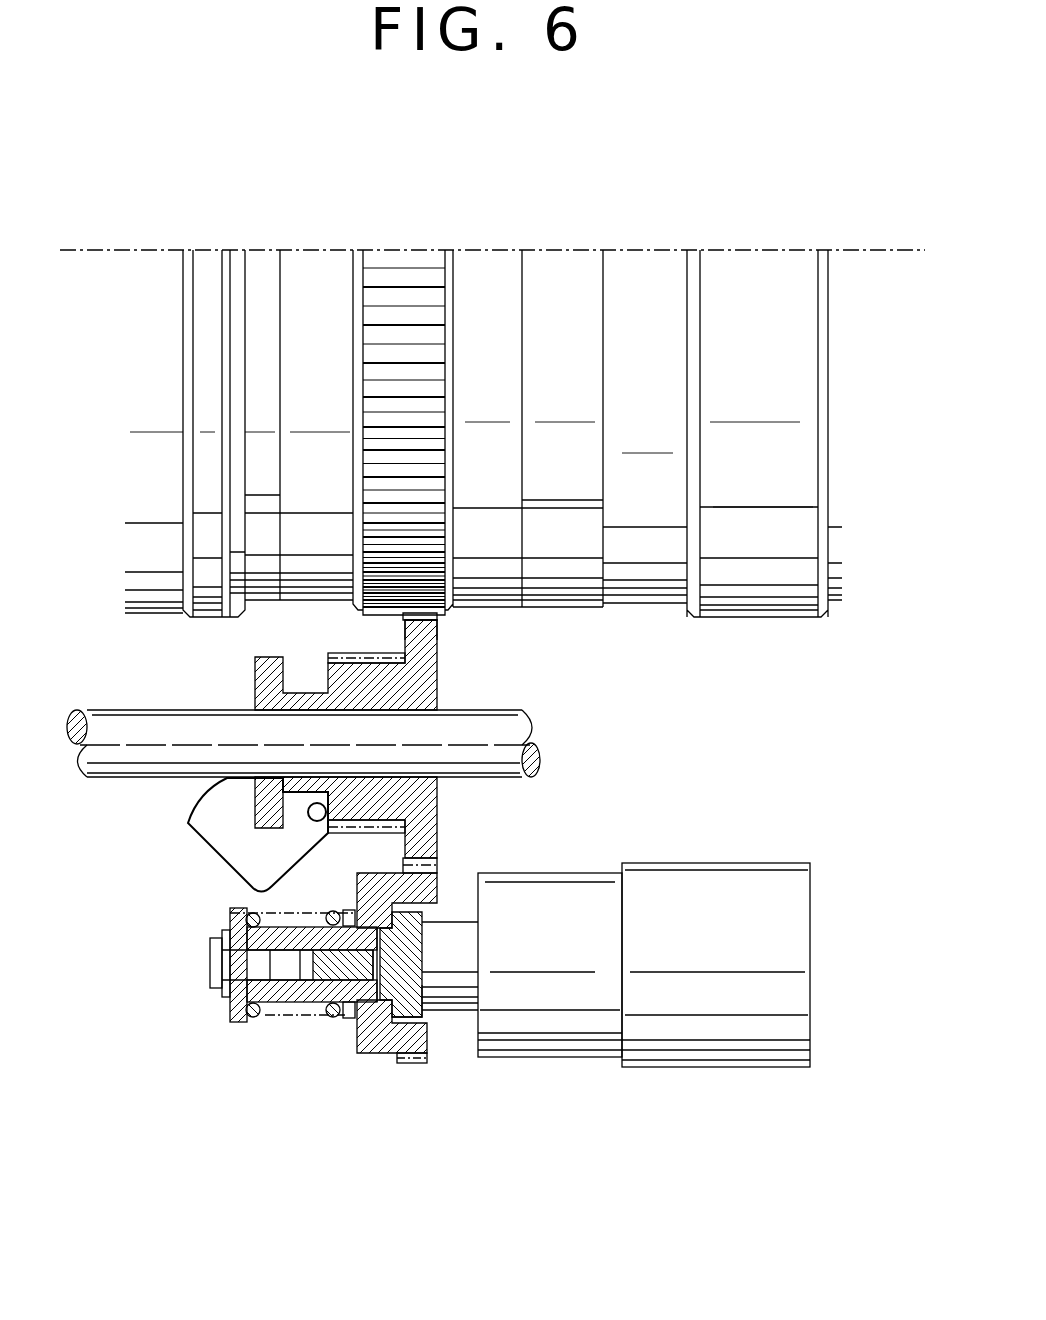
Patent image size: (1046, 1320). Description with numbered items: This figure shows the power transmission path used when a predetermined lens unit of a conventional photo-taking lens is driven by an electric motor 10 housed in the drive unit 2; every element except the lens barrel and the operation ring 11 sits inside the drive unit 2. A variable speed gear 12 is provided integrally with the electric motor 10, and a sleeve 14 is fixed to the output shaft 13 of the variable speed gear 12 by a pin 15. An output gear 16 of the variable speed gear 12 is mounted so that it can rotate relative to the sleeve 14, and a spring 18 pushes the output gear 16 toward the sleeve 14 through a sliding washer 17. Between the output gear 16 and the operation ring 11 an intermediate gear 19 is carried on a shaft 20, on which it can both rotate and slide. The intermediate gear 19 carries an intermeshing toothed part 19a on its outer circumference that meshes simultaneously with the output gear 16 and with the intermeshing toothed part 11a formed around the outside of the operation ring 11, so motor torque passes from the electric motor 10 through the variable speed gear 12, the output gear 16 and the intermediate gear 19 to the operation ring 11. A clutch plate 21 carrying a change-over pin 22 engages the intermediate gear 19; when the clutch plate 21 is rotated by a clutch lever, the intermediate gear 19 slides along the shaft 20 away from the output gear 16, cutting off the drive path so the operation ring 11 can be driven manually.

The drive unit 2 is at (705, 848).
The electric motor 10 is at (730, 1032).
The operation ring 11 is at (317, 290).
The intermeshing toothed part 11a is at (396, 614).
The variable speed gear 12 is at (567, 1027).
The output shaft 13 is at (323, 973).
The sleeve 14 is at (413, 1007).
The pin 15 is at (387, 970).
The output gear 16 is at (440, 897).
The sliding washer 17 is at (352, 1010).
The spring 18 is at (277, 1015).
The intermediate gear 19 is at (422, 683).
The intermeshing toothed part 19a is at (424, 624).
The shaft 20 is at (508, 733).
The clutch plate 21 is at (222, 803).
The change-over pin 22 is at (315, 822).